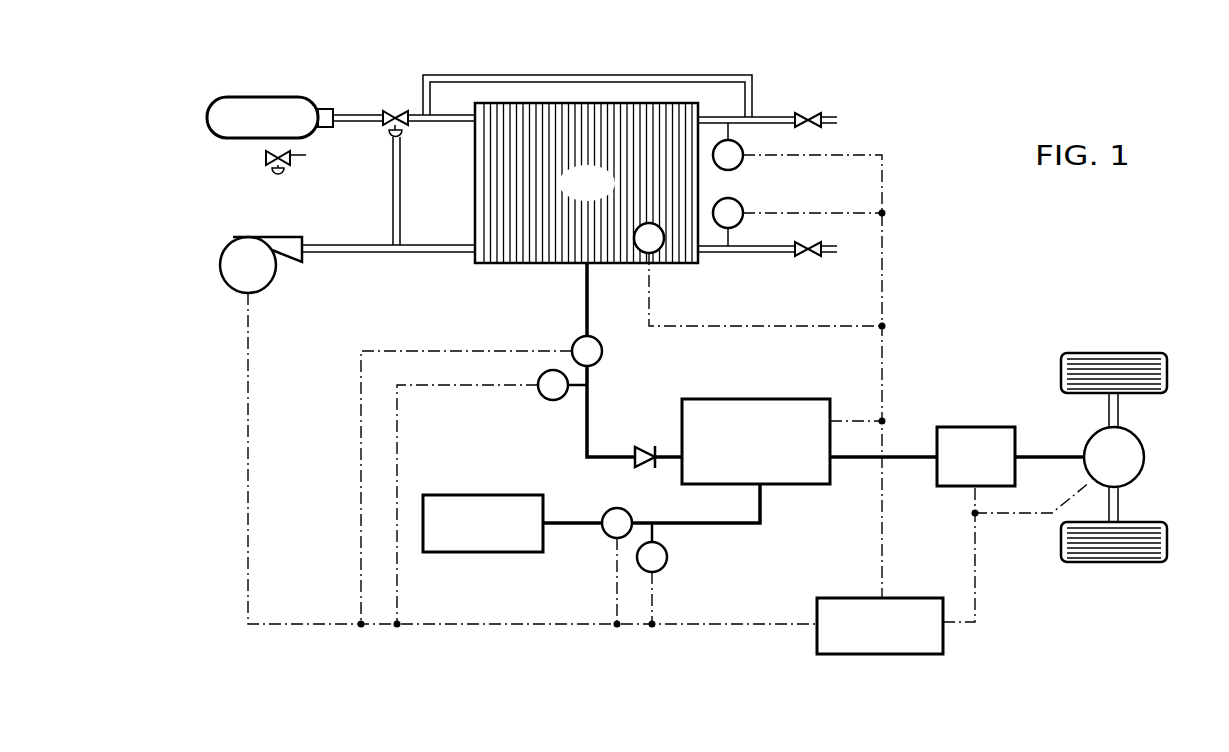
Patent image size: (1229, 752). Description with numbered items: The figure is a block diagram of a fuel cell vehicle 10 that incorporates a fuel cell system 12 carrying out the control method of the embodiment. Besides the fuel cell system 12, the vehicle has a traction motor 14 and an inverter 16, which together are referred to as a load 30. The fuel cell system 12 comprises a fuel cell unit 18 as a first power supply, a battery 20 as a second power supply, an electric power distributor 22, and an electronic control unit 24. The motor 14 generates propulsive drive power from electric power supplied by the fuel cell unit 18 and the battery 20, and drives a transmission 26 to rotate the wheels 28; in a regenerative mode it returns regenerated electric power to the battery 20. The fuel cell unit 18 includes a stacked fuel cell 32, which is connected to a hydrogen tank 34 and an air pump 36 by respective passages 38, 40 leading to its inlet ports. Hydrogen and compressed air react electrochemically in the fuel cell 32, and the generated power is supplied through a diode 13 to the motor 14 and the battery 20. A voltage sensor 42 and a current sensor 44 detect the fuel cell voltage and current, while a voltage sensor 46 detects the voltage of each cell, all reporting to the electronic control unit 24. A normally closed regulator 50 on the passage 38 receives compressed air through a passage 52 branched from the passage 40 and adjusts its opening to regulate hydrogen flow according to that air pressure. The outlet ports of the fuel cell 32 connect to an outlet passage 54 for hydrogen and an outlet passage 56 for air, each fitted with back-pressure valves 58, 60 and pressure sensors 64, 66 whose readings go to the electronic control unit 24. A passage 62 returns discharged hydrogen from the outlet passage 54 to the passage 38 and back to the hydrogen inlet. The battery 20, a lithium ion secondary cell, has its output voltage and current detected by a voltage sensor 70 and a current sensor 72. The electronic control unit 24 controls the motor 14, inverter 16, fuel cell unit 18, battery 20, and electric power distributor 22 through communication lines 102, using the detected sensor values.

The fuel cell vehicle 10 is at (957, 98).
The fuel cell system 12 is at (900, 166).
The diode 13 is at (640, 446).
The traction motor 14 is at (1145, 457).
The inverter 16 is at (1000, 427).
The fuel cell unit 18 is at (347, 56).
The battery 20 is at (512, 495).
The electric power distributor 22 is at (720, 399).
The electronic control unit 24 is at (925, 598).
The transmission 26 is at (1119, 410).
The wheels 28 is at (1168, 373).
The load 30 is at (1030, 540).
The fuel cell 32 is at (482, 264).
The hydrogen tank 34 is at (247, 97).
The air pump 36 is at (220, 265).
The passage 38 is at (358, 114).
The passage 40 is at (340, 245).
The voltage sensor 42 is at (553, 400).
The current sensor 44 is at (603, 351).
The voltage sensor 46 is at (635, 240).
The normally closed regulator 50 is at (395, 110).
The passage 52 is at (401, 192).
The outlet passage 54 is at (768, 117).
The outlet passage 56 is at (745, 253).
The back-pressure valve 58 is at (808, 114).
The back-pressure valve 60 is at (808, 257).
The passage 62 is at (594, 75).
The pressure sensor 64 is at (743, 160).
The pressure sensor 66 is at (743, 206).
The voltage sensor 70 is at (667, 557).
The current sensor 72 is at (617, 508).
The communication lines 102 is at (690, 627).